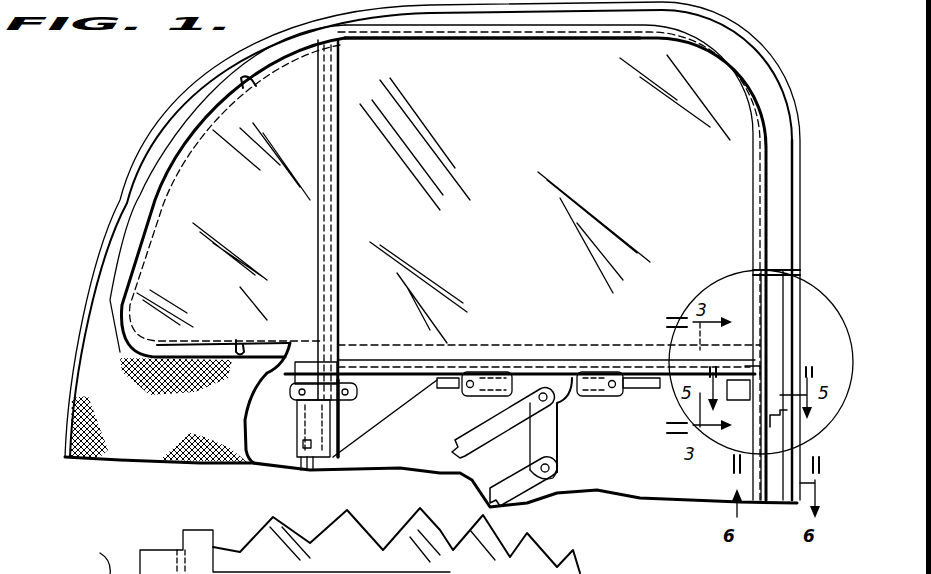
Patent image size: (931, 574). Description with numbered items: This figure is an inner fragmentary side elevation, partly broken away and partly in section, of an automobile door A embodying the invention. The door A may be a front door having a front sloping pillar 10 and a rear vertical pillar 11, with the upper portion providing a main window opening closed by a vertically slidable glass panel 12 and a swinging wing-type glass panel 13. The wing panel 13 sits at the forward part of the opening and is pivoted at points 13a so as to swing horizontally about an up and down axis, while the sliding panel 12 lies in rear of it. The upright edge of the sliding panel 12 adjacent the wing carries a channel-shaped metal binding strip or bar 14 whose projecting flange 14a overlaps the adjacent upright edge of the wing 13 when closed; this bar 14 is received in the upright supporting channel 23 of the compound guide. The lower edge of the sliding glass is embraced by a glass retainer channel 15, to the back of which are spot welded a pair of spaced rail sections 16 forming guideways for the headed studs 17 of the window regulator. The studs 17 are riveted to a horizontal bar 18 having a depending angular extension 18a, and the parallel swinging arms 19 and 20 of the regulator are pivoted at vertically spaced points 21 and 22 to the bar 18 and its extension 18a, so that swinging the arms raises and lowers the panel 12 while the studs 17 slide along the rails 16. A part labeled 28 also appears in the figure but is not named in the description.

The front sloping pillar 10 is at (123, 186).
The rear vertical pillar 11 is at (791, 190).
The vertically slidable glass panel 12 is at (540, 150).
The swinging glass panel 13 is at (240, 209).
The pivot points 13a is at (250, 92).
The metal binding strip or bar 14 is at (340, 197).
The projecting flange 14a is at (317, 253).
The glass retainer channel 15 is at (604, 360).
The rail sections 16 is at (450, 390).
The regulator studs 17 is at (470, 377).
The horizontal bar 18 is at (565, 377).
The depending angular extension 18a is at (555, 450).
The swinging arm 19 is at (472, 452).
The swinging arm 20 is at (518, 497).
The pivot point 21 is at (540, 392).
The pivot point 22 is at (550, 485).
The supporting channel 23 is at (86, 560).
The channel flange 28 is at (793, 446).
The automobile door A is at (541, 42).